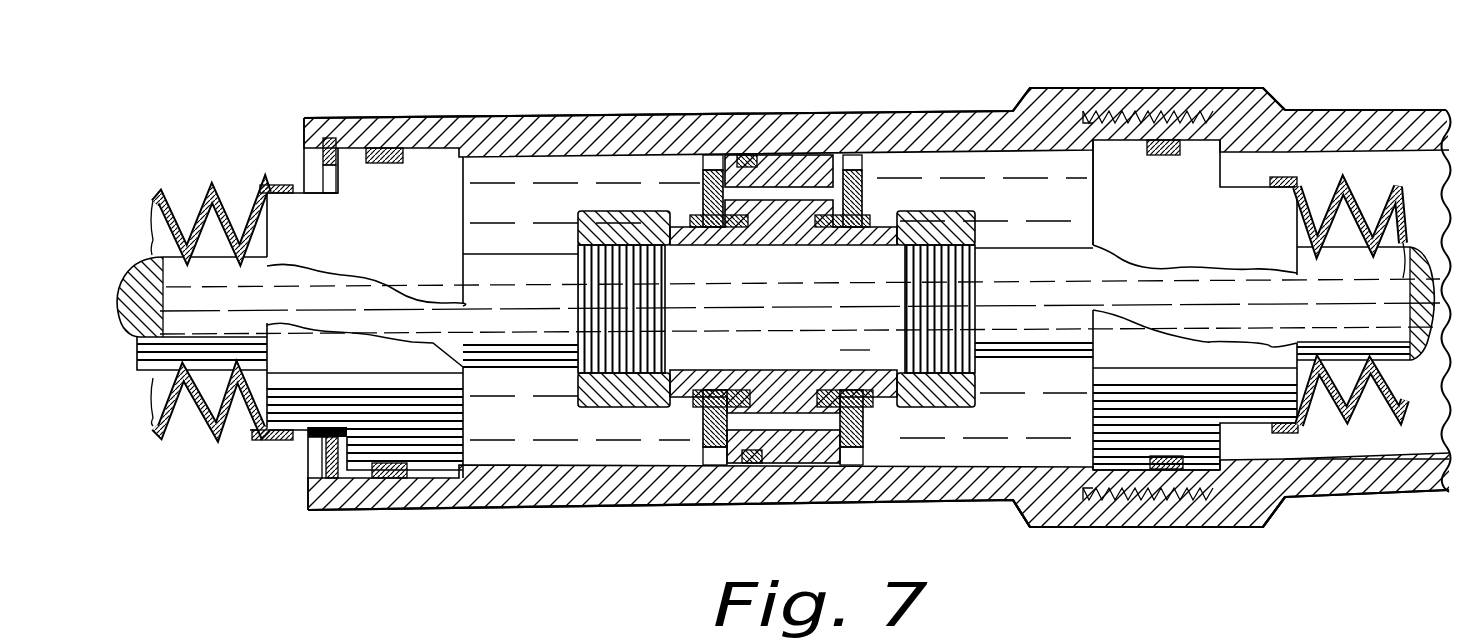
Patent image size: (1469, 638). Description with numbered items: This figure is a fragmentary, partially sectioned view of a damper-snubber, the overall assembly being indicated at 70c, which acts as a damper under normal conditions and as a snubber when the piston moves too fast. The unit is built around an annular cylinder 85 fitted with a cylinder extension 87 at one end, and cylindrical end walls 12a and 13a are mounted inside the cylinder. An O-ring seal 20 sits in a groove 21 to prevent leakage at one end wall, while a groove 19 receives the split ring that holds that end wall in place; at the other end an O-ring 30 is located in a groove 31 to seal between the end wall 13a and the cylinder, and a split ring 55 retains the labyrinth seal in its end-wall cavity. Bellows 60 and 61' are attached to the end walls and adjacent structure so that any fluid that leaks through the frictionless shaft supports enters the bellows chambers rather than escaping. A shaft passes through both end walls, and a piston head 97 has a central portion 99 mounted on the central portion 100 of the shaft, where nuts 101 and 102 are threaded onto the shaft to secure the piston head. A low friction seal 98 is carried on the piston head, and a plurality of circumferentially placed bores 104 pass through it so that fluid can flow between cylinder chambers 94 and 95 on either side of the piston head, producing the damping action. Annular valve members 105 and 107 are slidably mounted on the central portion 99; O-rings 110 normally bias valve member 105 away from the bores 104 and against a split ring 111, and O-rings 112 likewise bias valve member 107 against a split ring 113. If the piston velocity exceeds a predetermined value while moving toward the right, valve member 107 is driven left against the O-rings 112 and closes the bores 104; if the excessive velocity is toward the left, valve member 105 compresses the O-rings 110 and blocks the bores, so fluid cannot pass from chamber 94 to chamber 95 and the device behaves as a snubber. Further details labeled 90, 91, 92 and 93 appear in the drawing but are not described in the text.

The coupling assembly 70c is at (302, 88).
The groove 19 is at (328, 140).
The end wall 12a is at (437, 190).
The annular cylinder 85 is at (545, 125).
The annular valve member 105 is at (705, 170).
The bores 104 is at (780, 180).
The piston head 97 is at (750, 160).
The annular valve member 107 is at (850, 165).
The end wall 13a is at (1183, 178).
The cylinder extension 87 is at (1420, 118).
The nut 101 is at (623, 215).
The nut 102 is at (968, 196).
The split ring 55 is at (1093, 211).
The O-rings 110 is at (735, 266).
The central portion of piston head 99 is at (790, 240).
The O-rings 112 is at (848, 350).
The central portion of shaft 100 is at (1007, 373).
The split ring 111 is at (690, 408).
The split ring 113 is at (885, 407).
The bellows 60 is at (213, 438).
The lip 92 is at (332, 438).
The groove 21 is at (357, 508).
The O-ring seal 20 is at (381, 478).
The end cap 90 is at (426, 510).
The cylinder chamber 94 is at (576, 478).
The low friction seal 98 is at (751, 463).
The cylinder chamber 95 is at (991, 477).
The end wall 91 is at (1125, 508).
The O-ring 30 is at (1164, 495).
The groove 31 is at (1158, 470).
The bore 93 is at (1250, 480).
The bellows 61' is at (1352, 313).